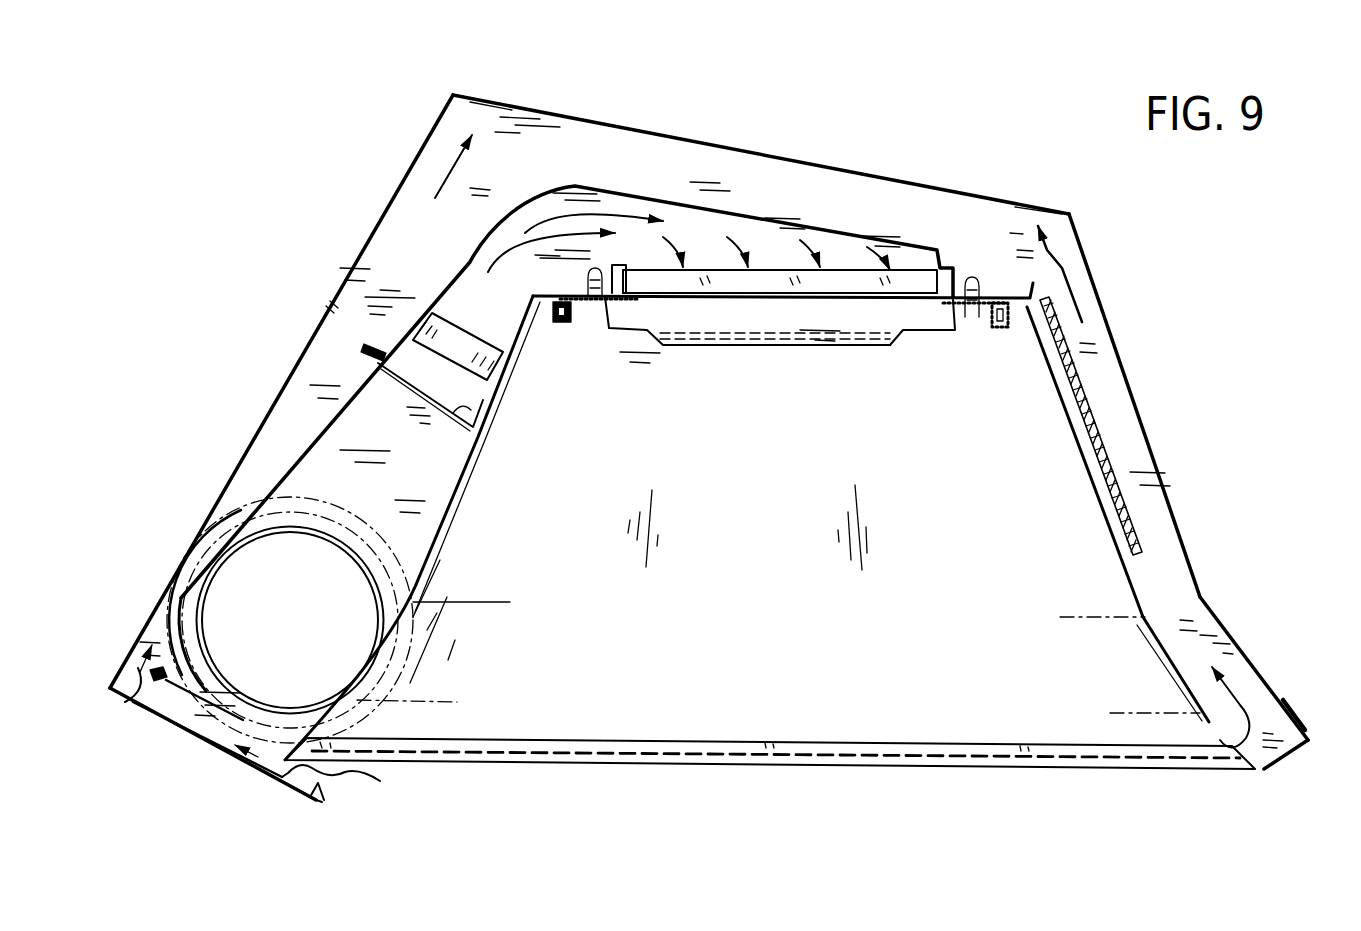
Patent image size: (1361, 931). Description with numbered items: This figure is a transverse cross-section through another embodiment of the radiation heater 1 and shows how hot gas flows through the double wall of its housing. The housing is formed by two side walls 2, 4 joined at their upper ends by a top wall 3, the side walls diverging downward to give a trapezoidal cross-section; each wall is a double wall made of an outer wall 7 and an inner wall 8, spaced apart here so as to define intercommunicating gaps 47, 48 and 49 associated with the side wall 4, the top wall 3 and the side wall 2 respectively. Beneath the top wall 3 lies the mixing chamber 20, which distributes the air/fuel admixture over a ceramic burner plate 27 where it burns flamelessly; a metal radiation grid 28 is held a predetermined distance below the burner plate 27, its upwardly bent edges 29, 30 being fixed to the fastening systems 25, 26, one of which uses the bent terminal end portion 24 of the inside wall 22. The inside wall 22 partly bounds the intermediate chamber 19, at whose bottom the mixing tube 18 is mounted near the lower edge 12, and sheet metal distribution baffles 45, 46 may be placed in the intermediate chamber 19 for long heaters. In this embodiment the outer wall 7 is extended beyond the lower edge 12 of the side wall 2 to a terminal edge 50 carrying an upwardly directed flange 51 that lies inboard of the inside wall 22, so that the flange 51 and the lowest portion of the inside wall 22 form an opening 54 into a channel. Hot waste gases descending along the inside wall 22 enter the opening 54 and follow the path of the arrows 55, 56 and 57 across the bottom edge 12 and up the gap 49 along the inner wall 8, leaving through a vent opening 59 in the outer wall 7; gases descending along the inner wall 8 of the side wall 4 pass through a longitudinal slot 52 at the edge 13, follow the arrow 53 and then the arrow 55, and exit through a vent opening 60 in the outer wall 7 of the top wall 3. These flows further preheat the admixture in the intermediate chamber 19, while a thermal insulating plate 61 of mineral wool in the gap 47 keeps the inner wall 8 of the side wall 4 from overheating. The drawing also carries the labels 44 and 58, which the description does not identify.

The radiation heater 1 is at (633, 118).
The side wall 2 is at (300, 343).
The top wall 3 is at (897, 172).
The side wall 4 is at (1148, 413).
The outer wall 7 is at (815, 160).
The inner wall 8 is at (347, 403).
The peripheral end sheet 12 is at (165, 683).
The peripheral end sheet 13 is at (1293, 760).
The mixing tube 18 is at (377, 597).
The intermediate chamber 19 is at (432, 495).
The mixing chamber 20 is at (723, 223).
The inside wall 22 is at (472, 457).
The bent terminal end portion 24 is at (532, 300).
The fastening system 25 is at (594, 318).
The fastening system 26 is at (972, 325).
The ceramic burner plate 27 is at (880, 283).
The radiation grid 28 is at (818, 346).
The edge 29 is at (643, 335).
The edge 30 is at (932, 338).
The bottom channel 44 is at (890, 762).
The distribution baffle 45 is at (500, 373).
The distribution baffle 46 is at (478, 410).
The gap 47 is at (1173, 560).
The gap 48 is at (662, 152).
The gap 49 is at (290, 393).
The terminal edge 50 is at (198, 742).
The upwardly directed flange 51 is at (317, 787).
The longitudinal slot 52 is at (1220, 735).
The arrow 53 is at (1228, 690).
The opening 54 is at (350, 775).
The arrow 55 is at (273, 783).
The arrow 56 is at (137, 690).
The arrow 57 is at (455, 167).
The air flow 58 is at (1060, 270).
The vent opening 59 is at (492, 100).
The vent opening 60 is at (1028, 203).
The thermal insulating plate 61 is at (1077, 450).